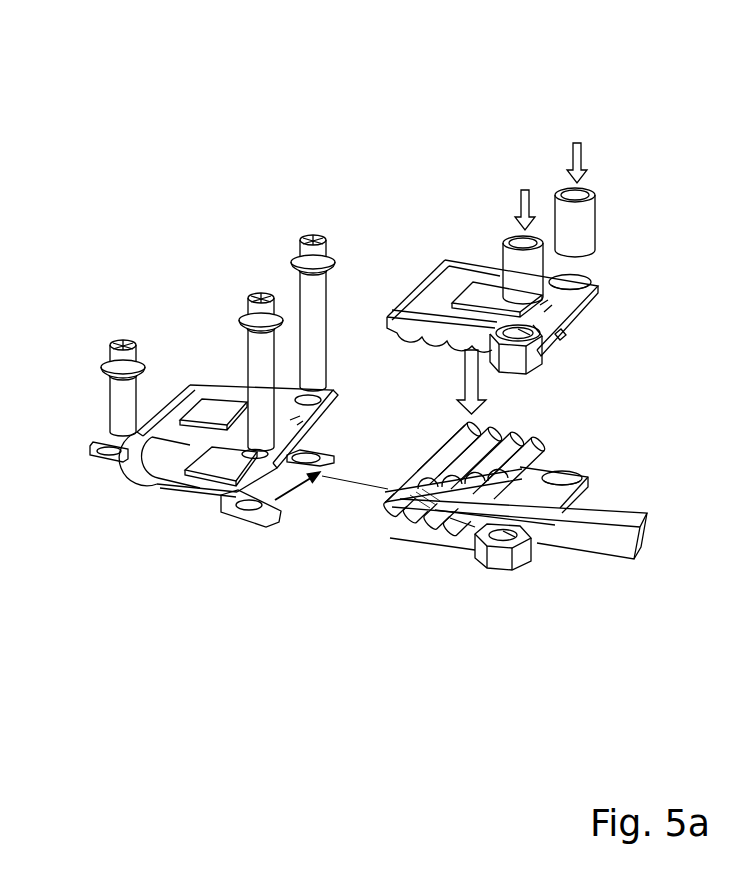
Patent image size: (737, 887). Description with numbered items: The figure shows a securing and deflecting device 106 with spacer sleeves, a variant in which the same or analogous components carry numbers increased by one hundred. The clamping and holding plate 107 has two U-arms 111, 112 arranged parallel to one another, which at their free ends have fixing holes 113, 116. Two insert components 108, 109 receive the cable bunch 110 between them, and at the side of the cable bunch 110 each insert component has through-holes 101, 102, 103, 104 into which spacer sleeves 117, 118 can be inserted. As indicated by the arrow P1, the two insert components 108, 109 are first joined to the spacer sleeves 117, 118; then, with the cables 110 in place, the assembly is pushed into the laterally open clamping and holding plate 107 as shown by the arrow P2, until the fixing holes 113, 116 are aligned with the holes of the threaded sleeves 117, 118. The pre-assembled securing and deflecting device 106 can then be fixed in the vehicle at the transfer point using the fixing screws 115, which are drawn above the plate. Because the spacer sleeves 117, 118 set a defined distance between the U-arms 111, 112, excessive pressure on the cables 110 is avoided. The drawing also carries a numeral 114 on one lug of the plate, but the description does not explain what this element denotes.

The through-hole 101 is at (531, 565).
The through-hole 102 is at (562, 478).
The through-hole 103 is at (548, 356).
The through-hole 104 is at (574, 283).
The securing and deflecting device 106 is at (528, 154).
The clamping and holding plate 107 is at (163, 486).
The insert component 108 is at (413, 527).
The insert component 109 is at (561, 306).
The cable bunch 110 is at (603, 522).
The U-arm 111 is at (199, 492).
The U-arm 112 is at (189, 384).
The fixing hole 113 is at (260, 466).
The fastening lug 114 is at (124, 462).
The fixing screw 115 is at (112, 341).
The fixing hole 116 is at (325, 388).
The spacer sleeve 117 is at (504, 262).
The spacer sleeve 118 is at (581, 230).
The arrow P1 is at (455, 382).
The arrow P2 is at (331, 499).